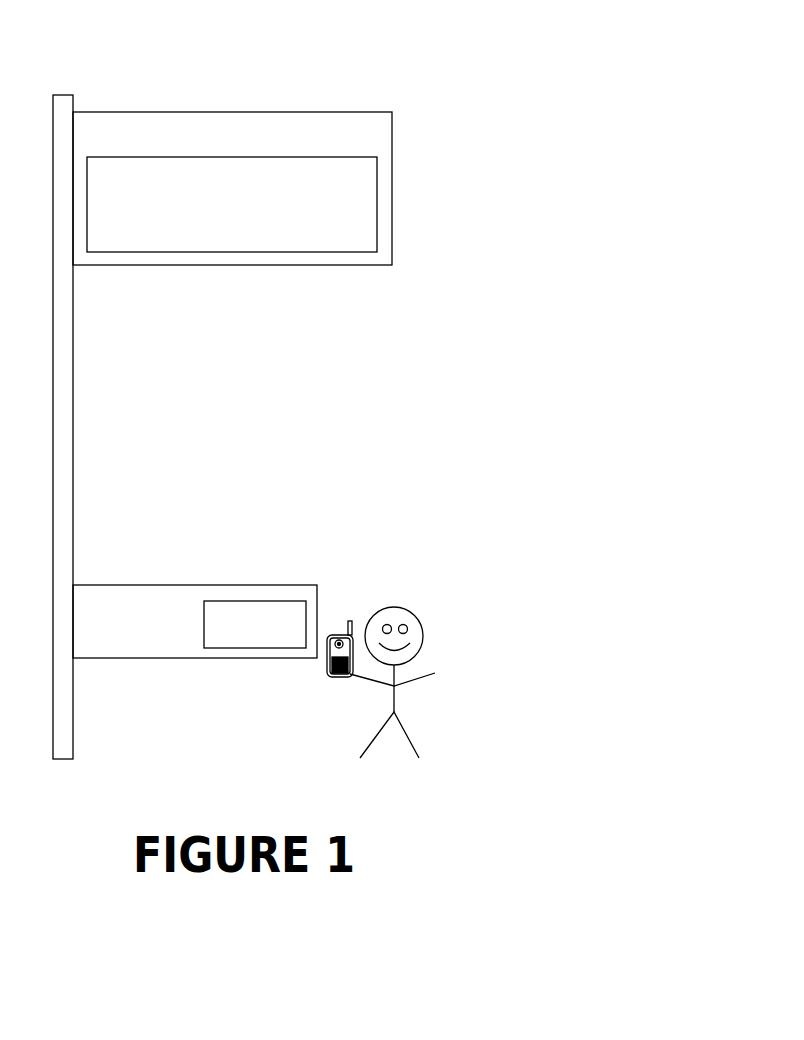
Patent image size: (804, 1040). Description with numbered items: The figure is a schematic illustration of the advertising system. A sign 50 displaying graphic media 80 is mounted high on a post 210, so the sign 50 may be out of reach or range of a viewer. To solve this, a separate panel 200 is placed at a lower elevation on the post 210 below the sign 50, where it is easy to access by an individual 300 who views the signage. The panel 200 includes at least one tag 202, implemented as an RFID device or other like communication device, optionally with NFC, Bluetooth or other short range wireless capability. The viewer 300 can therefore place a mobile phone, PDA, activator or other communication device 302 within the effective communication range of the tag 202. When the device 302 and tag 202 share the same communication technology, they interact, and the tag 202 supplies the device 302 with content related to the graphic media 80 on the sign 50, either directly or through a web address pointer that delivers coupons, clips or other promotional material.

The post 210 is at (131, 396).
The sign 50 is at (281, 188).
The graphic media 80 is at (232, 252).
The panel 200 is at (195, 593).
The tag 202 is at (317, 594).
The individual 300 is at (457, 659).
The communication device 302 is at (277, 674).